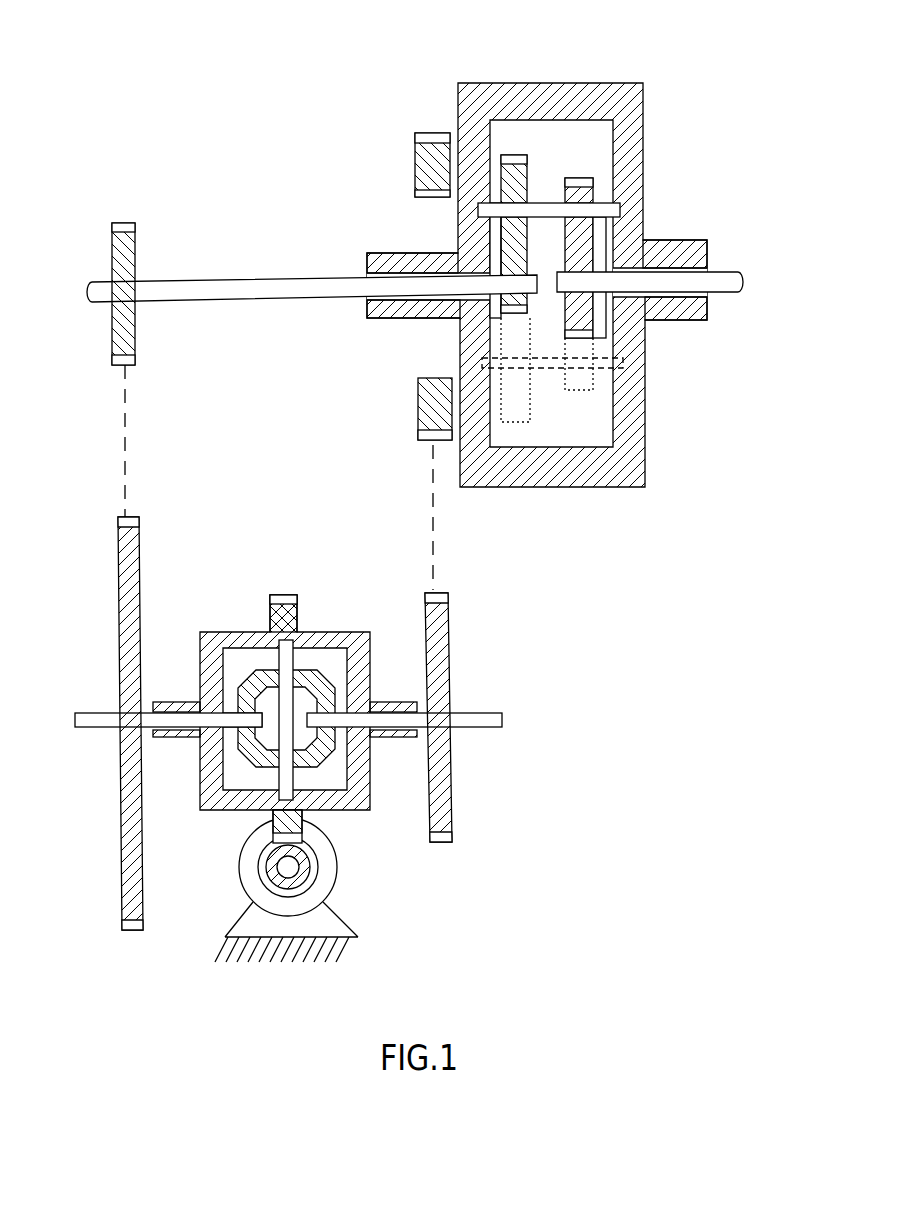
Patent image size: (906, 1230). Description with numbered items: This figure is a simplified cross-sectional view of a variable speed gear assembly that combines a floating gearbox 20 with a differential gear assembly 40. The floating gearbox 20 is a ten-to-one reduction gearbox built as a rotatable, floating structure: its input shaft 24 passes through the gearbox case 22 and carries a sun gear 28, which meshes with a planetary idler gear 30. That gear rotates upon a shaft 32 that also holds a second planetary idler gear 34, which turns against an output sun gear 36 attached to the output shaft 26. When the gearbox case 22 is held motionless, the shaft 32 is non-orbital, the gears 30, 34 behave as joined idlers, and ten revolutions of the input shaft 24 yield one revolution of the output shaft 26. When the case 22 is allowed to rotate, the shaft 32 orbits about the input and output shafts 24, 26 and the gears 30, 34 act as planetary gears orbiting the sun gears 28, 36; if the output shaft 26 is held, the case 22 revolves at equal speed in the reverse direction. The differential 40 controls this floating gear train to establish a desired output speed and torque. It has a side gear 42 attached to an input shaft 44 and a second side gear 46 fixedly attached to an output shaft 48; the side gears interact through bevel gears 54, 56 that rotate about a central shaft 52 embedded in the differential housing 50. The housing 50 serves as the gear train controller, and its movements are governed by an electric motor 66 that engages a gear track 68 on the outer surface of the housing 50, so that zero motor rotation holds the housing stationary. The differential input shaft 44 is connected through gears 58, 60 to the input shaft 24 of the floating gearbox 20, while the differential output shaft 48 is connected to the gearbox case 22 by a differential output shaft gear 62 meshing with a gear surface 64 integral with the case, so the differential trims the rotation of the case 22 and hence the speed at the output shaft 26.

The floating gearbox 20 is at (432, 300).
The gearbox case 22 is at (545, 82).
The input shaft 24 is at (253, 282).
The output shaft 26 is at (728, 273).
The sun gear 28 is at (500, 273).
The planetary idler gear 30 is at (512, 156).
The shaft 32 is at (491, 203).
The planetary idler gear 34 is at (580, 178).
The output sun gear 36 is at (643, 245).
The differential gear assembly 40 is at (298, 742).
The side gear 42 is at (242, 694).
The input shaft 44 is at (110, 712).
The second side gear 46 is at (372, 690).
The output shaft 48 is at (423, 737).
The differential housing 50 is at (206, 789).
The central shaft 52 is at (312, 672).
The bevel gear 54 is at (287, 658).
The bevel gear 56 is at (262, 805).
The gear 58 is at (140, 603).
The gear 60 is at (138, 307).
The differential output shaft gear 62 is at (449, 646).
The gear surface 64 is at (427, 403).
The electric motor 66 is at (326, 887).
The gear track 68 is at (318, 845).